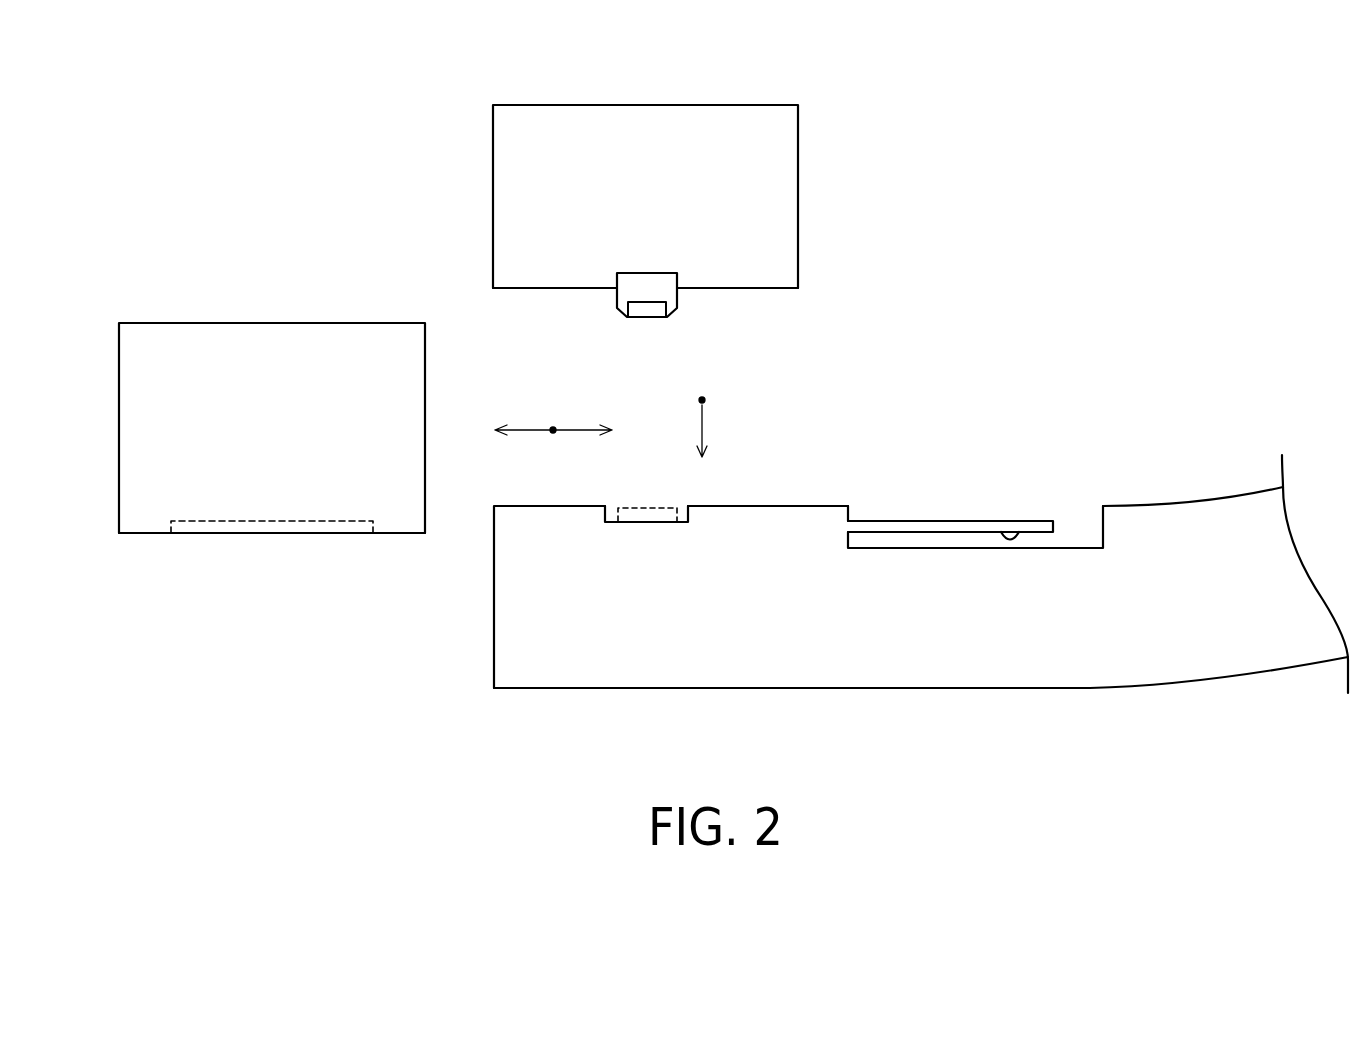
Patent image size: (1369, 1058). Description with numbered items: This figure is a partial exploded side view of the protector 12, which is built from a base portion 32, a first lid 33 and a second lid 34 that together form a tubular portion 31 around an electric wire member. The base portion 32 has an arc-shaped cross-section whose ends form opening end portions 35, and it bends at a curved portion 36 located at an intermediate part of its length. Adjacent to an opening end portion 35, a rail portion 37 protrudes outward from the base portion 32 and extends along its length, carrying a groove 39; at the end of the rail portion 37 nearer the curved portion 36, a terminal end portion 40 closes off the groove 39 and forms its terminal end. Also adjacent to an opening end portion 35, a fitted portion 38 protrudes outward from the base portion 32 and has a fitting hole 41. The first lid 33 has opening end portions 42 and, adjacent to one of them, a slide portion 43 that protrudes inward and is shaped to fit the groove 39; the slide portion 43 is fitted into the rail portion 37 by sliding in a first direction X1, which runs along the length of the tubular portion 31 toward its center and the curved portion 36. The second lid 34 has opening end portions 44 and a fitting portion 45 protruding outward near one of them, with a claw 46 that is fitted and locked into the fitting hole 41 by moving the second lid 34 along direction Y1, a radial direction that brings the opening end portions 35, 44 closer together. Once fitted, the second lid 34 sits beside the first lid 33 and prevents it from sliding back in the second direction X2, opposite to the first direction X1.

The protector 12 is at (1185, 318).
The tubular portion 31 is at (459, 292).
The base portion 32 is at (942, 690).
The first lid 33 is at (270, 322).
The second lid 34 is at (644, 104).
The opening end portion 35 is at (808, 506).
The curved portion 36 is at (1292, 673).
The rail portion 37 is at (946, 542).
The fitted portion 38 is at (650, 522).
The groove 39 is at (1016, 530).
The terminal end portion 40 is at (1073, 532).
The fitting hole 41 is at (628, 497).
The opening end portion 42 is at (268, 537).
The slide portion 43 is at (272, 518).
The opening end portion 44 is at (745, 289).
The fitting portion 45 is at (657, 318).
The claw 46 is at (643, 317).
The first direction X1 is at (577, 428).
The second direction X2 is at (522, 428).
The direction Y1 is at (707, 419).